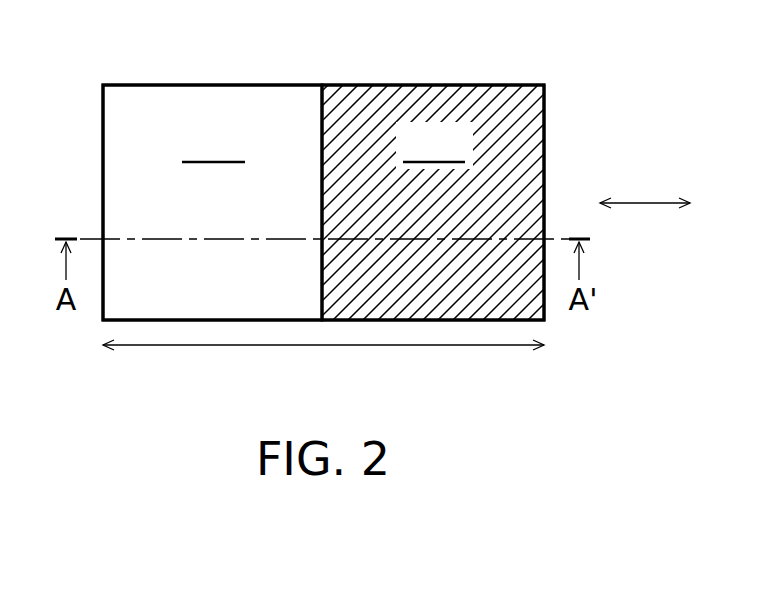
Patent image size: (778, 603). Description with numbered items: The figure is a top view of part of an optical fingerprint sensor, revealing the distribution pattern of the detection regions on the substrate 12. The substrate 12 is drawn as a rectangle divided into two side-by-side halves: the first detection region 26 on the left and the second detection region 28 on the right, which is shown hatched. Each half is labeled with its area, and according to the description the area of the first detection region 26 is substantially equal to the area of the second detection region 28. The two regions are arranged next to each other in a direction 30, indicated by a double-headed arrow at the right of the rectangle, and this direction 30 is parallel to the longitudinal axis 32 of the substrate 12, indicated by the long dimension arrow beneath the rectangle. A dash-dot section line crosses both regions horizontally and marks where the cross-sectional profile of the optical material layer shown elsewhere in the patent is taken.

The substrate 12 is at (563, 105).
The first detection region 26 is at (212, 85).
The second detection region 28 is at (432, 85).
The direction 30 is at (645, 187).
The longitudinal axis 32 is at (323, 364).